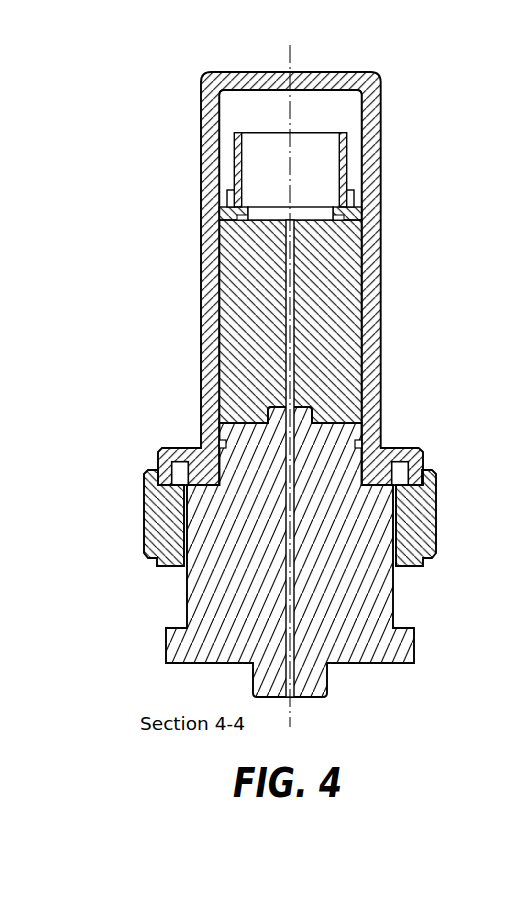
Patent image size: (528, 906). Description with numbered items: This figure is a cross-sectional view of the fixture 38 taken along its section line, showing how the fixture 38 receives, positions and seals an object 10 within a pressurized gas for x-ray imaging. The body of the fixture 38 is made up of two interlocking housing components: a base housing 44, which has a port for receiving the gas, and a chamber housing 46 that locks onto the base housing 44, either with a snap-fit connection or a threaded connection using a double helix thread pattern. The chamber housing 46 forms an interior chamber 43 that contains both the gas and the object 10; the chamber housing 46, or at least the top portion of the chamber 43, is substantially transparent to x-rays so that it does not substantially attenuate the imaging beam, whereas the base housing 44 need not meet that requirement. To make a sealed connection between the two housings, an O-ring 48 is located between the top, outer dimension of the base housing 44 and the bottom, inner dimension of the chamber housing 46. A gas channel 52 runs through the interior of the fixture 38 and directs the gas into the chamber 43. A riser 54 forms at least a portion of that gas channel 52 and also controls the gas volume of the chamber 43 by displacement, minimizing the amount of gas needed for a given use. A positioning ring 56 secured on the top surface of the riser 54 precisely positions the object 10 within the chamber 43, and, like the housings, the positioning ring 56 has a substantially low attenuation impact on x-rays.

The fixture 38 is at (147, 85).
The interior chamber 43 is at (348, 115).
The object 10 is at (256, 147).
The positioning ring 56 is at (231, 193).
The riser member 54 is at (238, 268).
The chamber housing 46 is at (381, 267).
The gas channel 52 is at (300, 327).
The O-ring 48 is at (233, 437).
The base housing 44 is at (437, 485).